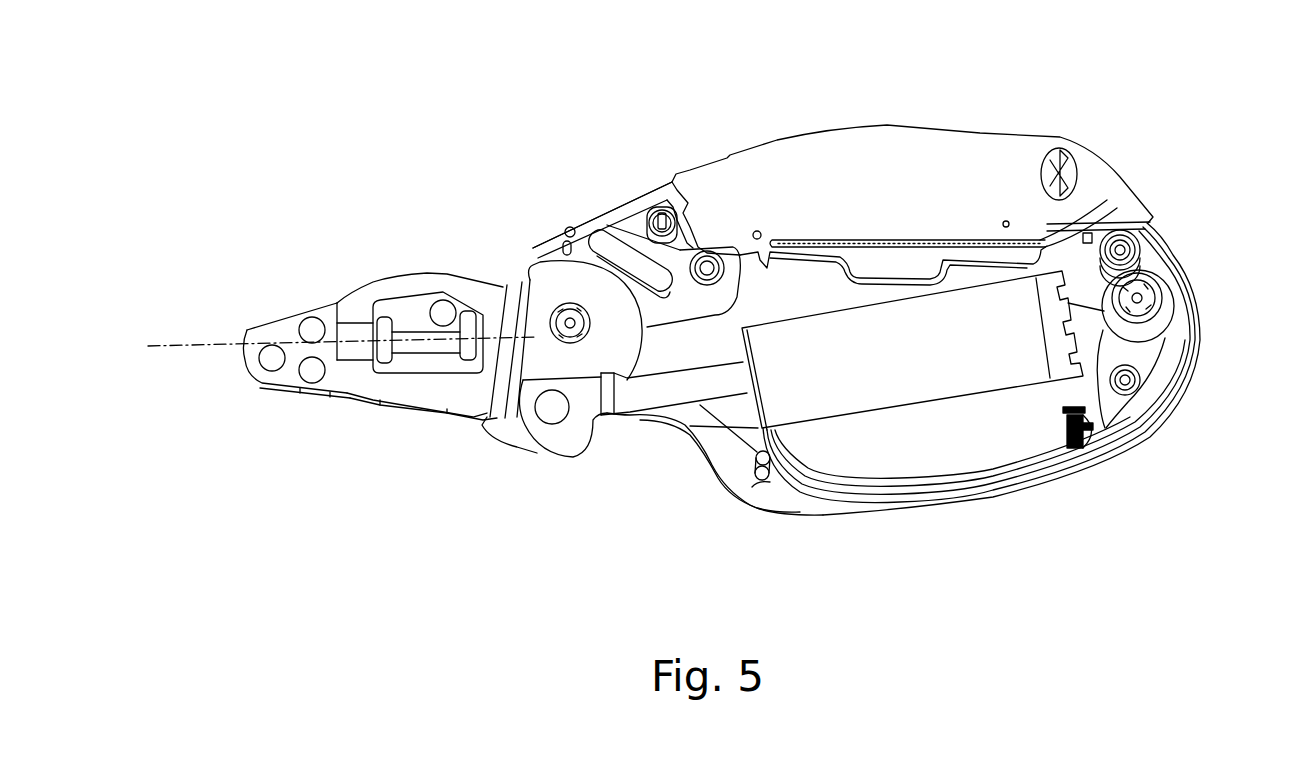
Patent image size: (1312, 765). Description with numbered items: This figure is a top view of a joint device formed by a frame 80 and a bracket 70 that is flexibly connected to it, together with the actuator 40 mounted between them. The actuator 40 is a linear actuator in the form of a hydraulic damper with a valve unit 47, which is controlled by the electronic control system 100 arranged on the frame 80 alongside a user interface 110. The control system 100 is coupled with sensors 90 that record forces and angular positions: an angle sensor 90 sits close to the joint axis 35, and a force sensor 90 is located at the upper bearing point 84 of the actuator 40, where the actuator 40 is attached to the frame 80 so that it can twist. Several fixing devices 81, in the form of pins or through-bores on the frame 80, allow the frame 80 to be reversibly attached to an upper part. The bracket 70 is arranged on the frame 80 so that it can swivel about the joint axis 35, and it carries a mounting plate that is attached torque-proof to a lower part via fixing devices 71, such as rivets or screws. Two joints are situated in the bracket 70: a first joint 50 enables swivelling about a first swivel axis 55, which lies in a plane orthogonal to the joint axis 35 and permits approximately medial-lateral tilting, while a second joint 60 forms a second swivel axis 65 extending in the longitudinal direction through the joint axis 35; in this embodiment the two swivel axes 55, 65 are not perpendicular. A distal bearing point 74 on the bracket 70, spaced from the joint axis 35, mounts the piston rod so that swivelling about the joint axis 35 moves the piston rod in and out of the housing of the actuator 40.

The joint axis 35 is at (570, 323).
The actuator 40 is at (783, 390).
The valve unit 47 is at (918, 455).
The first joint 50 is at (500, 283).
The first swivel axis 55 is at (483, 475).
The second joint 60 is at (447, 348).
The second swivel axis 65 is at (321, 351).
The bracket 70 is at (330, 290).
The fixing devices 71 is at (272, 358).
The distal bearing point 74 is at (552, 424).
The frame 80 is at (1203, 353).
The fixing devices 81 is at (1140, 233).
The bearing point 84 is at (1138, 297).
The sensors 90 is at (615, 250).
The electronic control system 100 is at (779, 153).
The user interface 110 is at (950, 125).